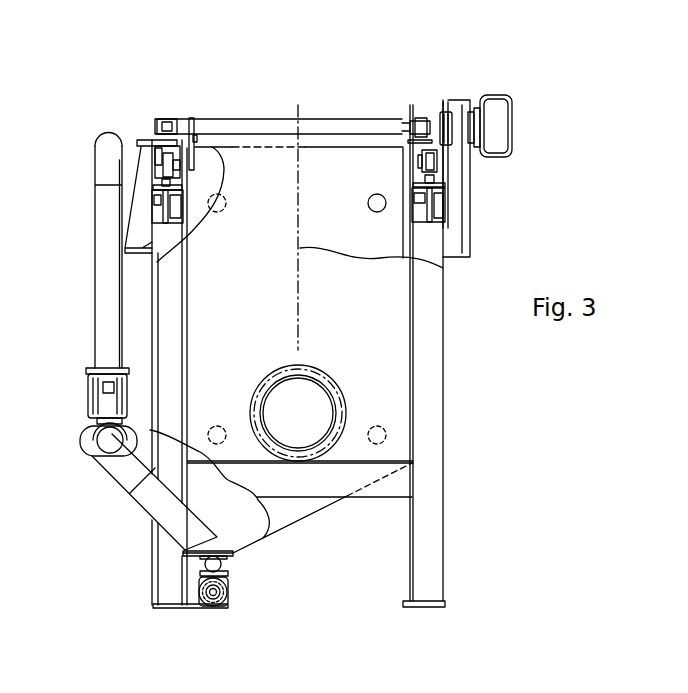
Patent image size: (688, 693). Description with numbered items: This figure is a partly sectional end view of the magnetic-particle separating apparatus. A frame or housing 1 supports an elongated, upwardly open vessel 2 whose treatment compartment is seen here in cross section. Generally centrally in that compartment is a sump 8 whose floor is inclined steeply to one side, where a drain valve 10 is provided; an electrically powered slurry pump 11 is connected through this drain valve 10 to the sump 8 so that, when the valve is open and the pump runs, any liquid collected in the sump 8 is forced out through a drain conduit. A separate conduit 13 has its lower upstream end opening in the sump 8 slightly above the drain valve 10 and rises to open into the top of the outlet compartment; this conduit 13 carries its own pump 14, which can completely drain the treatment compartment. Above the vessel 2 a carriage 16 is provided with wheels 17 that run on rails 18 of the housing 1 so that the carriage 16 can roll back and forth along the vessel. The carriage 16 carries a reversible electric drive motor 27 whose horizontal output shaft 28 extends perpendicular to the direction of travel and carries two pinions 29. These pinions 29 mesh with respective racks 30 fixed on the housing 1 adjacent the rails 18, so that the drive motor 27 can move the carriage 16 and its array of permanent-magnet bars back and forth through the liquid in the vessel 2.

The frame or housing 1 is at (433, 253).
The vessel 2 is at (412, 313).
The sump 8 is at (248, 535).
The drain valve 10 is at (225, 562).
The slurry pump 11 is at (230, 590).
The conduit 13 is at (103, 237).
The pump 14 is at (87, 438).
The carriage 16 is at (160, 146).
The wheels 17 is at (430, 172).
The rails 18 is at (158, 187).
The reversible electric drive motor 27 is at (515, 117).
The output shaft 28 is at (323, 128).
The pinions 29 is at (194, 128).
The racks 30 is at (196, 142).